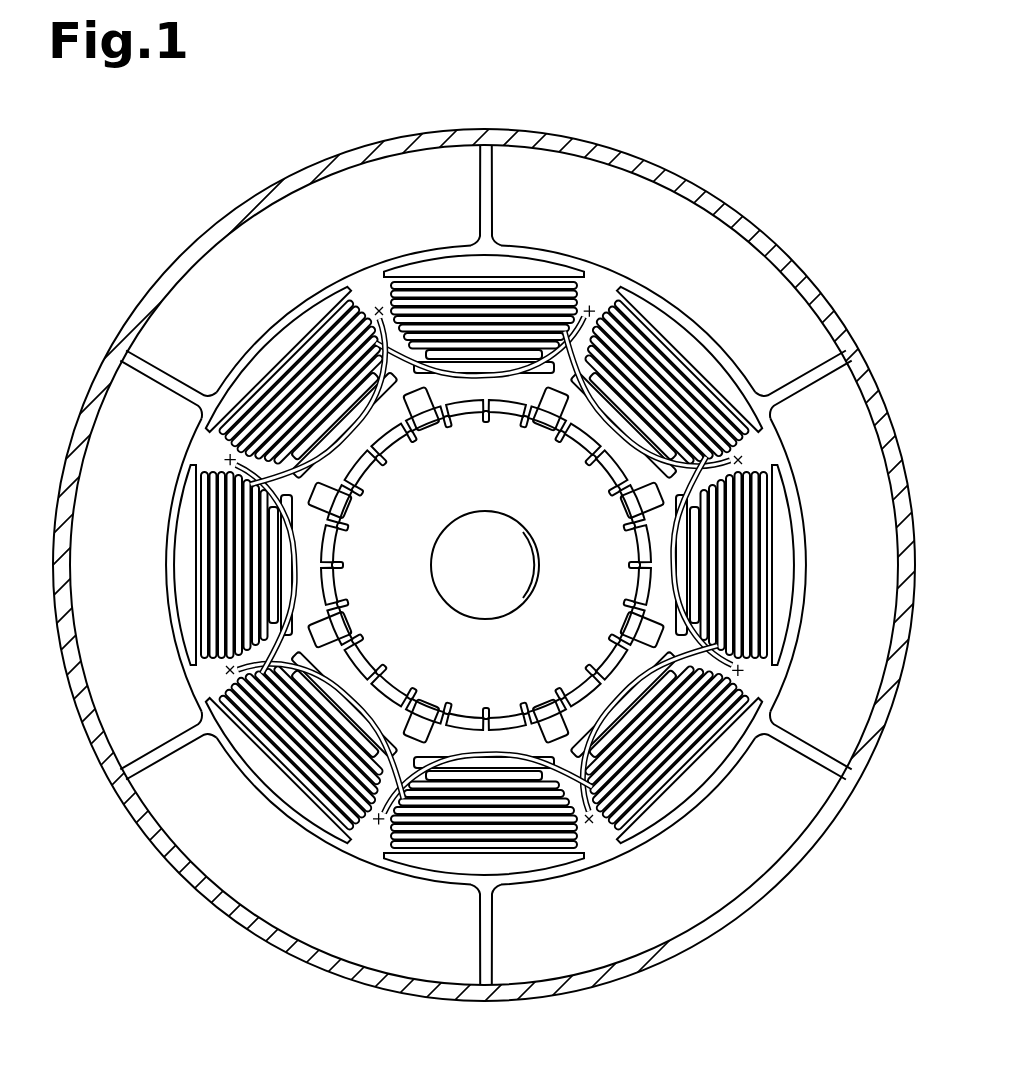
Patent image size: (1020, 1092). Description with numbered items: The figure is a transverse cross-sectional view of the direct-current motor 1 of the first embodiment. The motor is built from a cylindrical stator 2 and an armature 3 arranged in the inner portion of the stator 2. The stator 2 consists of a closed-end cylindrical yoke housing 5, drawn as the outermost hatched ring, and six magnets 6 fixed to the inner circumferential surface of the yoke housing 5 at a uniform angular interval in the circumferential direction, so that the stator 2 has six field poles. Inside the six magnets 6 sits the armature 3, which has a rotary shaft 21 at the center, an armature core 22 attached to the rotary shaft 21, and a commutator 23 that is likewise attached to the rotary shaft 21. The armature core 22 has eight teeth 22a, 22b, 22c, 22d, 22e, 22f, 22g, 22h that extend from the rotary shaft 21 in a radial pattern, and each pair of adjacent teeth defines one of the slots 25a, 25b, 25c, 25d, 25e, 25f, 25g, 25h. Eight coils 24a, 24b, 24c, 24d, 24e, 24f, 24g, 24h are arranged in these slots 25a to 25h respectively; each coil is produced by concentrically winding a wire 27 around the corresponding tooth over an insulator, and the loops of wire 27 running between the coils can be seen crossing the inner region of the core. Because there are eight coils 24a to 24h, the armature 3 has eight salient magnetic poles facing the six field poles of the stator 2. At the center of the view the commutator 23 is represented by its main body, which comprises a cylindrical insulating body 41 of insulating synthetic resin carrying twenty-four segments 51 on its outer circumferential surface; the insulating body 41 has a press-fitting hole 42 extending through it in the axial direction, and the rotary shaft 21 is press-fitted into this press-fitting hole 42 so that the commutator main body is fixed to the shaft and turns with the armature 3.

The direct-current motor 1 is at (733, 151).
The stator 2 is at (813, 270).
The armature 3 is at (484, 557).
The yoke housing 5 is at (853, 334).
The magnets 6 is at (548, 152).
The rotary shaft 21 is at (541, 520).
The armature core 22 is at (806, 497).
The tooth 22a is at (405, 250).
The tooth 22b is at (665, 296).
The tooth 22c is at (805, 535).
The tooth 22d is at (720, 777).
The tooth 22e is at (558, 882).
The tooth 22f is at (272, 805).
The tooth 22g is at (165, 602).
The tooth 22h is at (240, 357).
The commutator 23 is at (613, 443).
The coil 24a is at (522, 300).
The coil 24b is at (738, 372).
The coil 24c is at (758, 590).
The coil 24d is at (668, 770).
The coil 24e is at (455, 840).
The coil 24f is at (278, 740).
The coil 24g is at (210, 630).
The coil 24h is at (290, 338).
The slot 25a is at (372, 288).
The slot 25b is at (585, 318).
The slot 25c is at (740, 462).
The slot 25d is at (740, 675).
The slot 25e is at (592, 835).
The slot 25f is at (372, 835).
The slot 25g is at (228, 675).
The slot 25h is at (228, 455).
The wire 27 is at (330, 838).
The insulating body 41 is at (434, 598).
The press-fitting hole 42 is at (528, 556).
The segments 51 is at (433, 422).